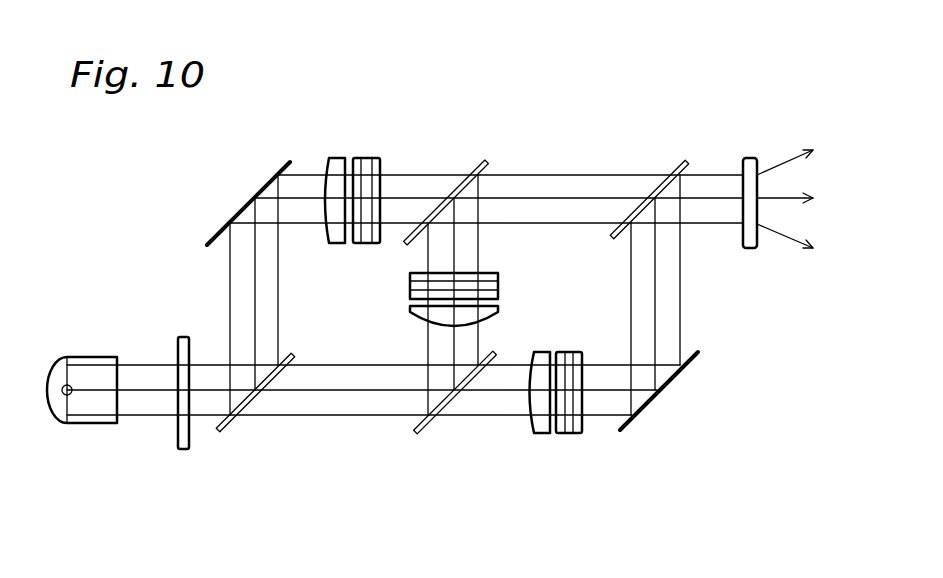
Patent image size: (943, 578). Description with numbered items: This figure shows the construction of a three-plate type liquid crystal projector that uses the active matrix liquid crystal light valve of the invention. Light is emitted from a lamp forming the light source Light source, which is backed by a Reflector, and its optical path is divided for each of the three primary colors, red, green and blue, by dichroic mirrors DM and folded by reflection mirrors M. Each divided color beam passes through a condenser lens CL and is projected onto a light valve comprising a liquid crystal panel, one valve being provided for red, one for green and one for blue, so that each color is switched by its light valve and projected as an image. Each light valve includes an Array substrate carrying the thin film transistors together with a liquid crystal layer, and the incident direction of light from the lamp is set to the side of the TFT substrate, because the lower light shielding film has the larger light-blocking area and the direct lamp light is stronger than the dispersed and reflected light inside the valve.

The reflection mirror M is at (248, 201).
The dichroic mirror DM is at (486, 163).
The condenser lens CL is at (328, 232).
The array substrate Array substrate is at (412, 272).
The reflector Reflector is at (67, 357).
The light source Light source is at (106, 435).